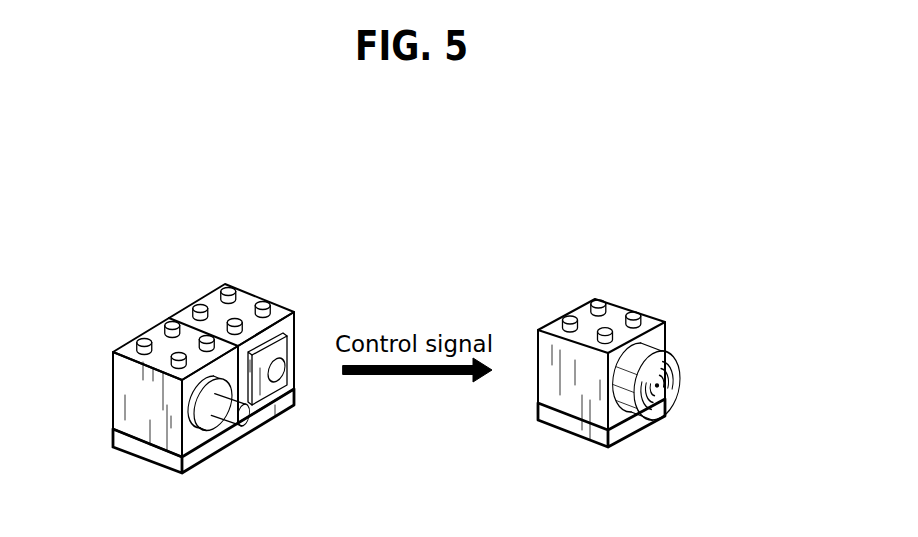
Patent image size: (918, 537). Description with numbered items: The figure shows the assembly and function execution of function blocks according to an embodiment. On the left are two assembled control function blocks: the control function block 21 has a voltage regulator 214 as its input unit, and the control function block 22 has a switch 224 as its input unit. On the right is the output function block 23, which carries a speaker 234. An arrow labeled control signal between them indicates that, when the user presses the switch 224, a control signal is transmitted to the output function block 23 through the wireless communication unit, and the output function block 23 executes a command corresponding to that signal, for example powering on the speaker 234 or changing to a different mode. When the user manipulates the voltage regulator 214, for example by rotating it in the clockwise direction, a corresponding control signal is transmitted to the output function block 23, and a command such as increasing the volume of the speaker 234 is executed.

The control function block 21 is at (125, 348).
The voltage regulator 214 is at (241, 419).
The control function block 22 is at (248, 302).
The switch 224 is at (277, 372).
The output function block 23 is at (615, 307).
The speaker 234 is at (663, 407).